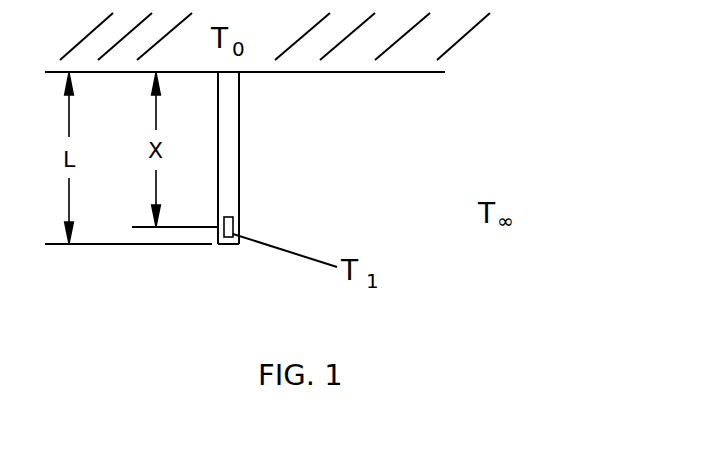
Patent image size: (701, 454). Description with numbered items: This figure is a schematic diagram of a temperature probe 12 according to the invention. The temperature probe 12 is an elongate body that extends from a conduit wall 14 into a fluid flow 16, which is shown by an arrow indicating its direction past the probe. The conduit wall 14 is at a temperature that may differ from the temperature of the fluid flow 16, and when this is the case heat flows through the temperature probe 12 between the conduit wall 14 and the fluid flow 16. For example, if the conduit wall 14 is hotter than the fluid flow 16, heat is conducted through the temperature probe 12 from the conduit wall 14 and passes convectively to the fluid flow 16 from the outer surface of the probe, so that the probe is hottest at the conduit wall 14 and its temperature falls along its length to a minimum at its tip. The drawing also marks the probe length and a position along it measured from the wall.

The temperature probe 12 is at (239, 181).
The conduit wall 14 is at (323, 72).
The fluid flow 16 is at (373, 154).